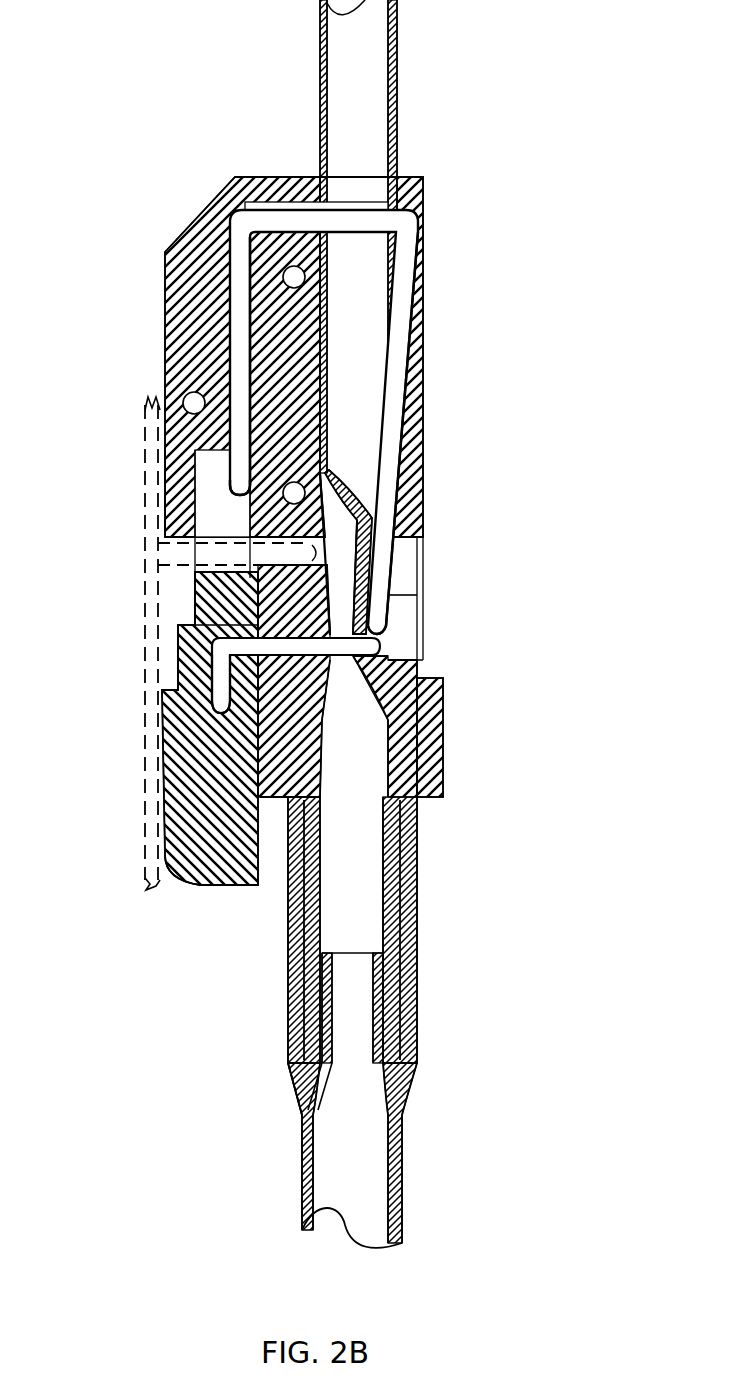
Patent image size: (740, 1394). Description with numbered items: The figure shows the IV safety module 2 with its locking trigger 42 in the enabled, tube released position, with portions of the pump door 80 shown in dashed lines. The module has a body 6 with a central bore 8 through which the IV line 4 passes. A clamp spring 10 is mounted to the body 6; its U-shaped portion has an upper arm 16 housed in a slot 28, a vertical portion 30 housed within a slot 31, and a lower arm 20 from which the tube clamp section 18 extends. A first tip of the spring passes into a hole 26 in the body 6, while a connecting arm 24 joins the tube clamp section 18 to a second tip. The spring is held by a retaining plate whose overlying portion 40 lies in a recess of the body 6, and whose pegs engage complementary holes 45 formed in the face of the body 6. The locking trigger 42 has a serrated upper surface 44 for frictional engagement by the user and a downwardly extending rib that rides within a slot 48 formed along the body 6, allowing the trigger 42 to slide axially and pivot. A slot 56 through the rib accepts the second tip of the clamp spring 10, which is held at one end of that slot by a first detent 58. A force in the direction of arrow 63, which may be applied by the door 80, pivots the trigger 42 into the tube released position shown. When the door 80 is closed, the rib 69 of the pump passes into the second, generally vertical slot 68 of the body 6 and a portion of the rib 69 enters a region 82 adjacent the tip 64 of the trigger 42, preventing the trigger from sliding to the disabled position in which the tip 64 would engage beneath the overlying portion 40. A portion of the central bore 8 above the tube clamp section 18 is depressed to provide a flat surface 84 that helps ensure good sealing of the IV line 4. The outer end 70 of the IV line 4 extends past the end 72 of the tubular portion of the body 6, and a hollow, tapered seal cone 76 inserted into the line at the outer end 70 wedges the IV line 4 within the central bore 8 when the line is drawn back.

The IV safety module 2 is at (163, 90).
The IV line 4 is at (398, 56).
The body 6 is at (427, 312).
The central bore 8 is at (385, 655).
The clamp spring 10 is at (390, 569).
The upper arm 16 is at (248, 255).
The tube clamp section 18 is at (383, 632).
The lower arm 20 is at (412, 255).
The connecting arm 24 is at (445, 737).
The hole 26 is at (222, 470).
The slot 28 is at (236, 300).
The vertical portion 30 is at (378, 206).
The slot 31 is at (280, 175).
The overlying portion 40 is at (163, 517).
The locking trigger 42 is at (160, 794).
The serrated upper surface 44 is at (164, 832).
The holes 45 is at (290, 268).
The slot 48 is at (194, 576).
The slot 56 is at (212, 690).
The first detent 58 is at (212, 648).
The arrow 63 is at (166, 771).
The tip 64 is at (175, 565).
The second slot 68 is at (362, 575).
The rib 69 is at (360, 540).
The outer end 70 is at (300, 1100).
The end 72 is at (298, 1080).
The seal cone 76 is at (305, 1113).
The door 80 is at (143, 732).
The region 82 is at (220, 507).
The flat surface 84 is at (180, 603).